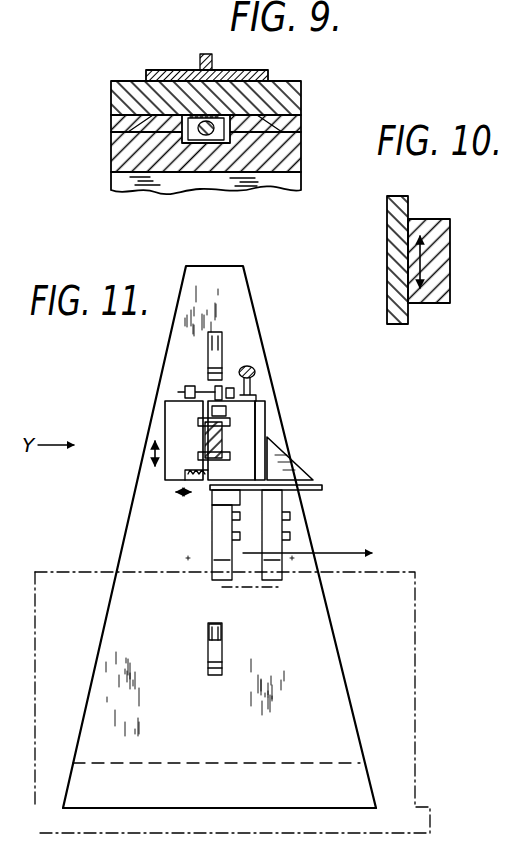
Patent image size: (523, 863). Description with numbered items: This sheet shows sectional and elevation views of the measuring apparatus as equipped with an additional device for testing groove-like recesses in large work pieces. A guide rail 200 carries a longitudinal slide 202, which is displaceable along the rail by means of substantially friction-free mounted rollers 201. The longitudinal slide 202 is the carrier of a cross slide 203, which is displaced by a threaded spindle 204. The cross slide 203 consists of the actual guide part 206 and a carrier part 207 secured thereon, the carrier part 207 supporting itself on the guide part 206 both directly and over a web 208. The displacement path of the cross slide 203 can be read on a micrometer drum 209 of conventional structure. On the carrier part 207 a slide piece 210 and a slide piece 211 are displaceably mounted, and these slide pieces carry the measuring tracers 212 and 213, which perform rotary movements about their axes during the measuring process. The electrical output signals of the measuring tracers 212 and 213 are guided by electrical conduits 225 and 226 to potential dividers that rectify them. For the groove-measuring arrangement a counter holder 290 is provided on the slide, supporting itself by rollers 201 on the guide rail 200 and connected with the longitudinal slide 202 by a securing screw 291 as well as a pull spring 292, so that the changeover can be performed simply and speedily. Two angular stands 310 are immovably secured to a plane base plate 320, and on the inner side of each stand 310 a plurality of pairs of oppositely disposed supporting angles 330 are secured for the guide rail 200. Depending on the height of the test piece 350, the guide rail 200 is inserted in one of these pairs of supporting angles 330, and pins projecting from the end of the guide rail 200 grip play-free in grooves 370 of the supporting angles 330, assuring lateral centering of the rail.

In FIG. 11, the guide rail 200 is at (167, 472).
In FIG. 11, the rollers 201 is at (200, 425).
In FIG. 9, the longitudinal slide 202 is at (303, 142).
In FIG. 11, the longitudinal slide 202 is at (237, 393).
In FIG. 9, the cross slide 203 is at (109, 97).
In FIG. 11, the cross slide 203 is at (268, 421).
In FIG. 9, the threaded spindle 204 is at (206, 143).
In FIG. 9, the guide part 206 is at (130, 84).
In FIG. 10, the carrier part 207 is at (404, 198).
In FIG. 9, the web 208 is at (234, 68).
In FIG. 11, the web 208 is at (298, 467).
In FIG. 11, the micrometer drum 209 is at (258, 370).
In FIG. 11, the slide piece 210 is at (301, 492).
In FIG. 10, the slide piece 211 is at (451, 243).
In FIG. 11, the slide piece 211 is at (211, 500).
In FIG. 11, the measuring tracer 212 is at (278, 582).
In FIG. 11, the measuring tracer 213 is at (217, 583).
In FIG. 11, the electrical conduit 225 is at (356, 573).
In FIG. 11, the electrical conduit 226 is at (366, 551).
In FIG. 11, the counter holder 290 is at (156, 438).
In FIG. 11, the securing screw 291 is at (194, 385).
In FIG. 11, the pull spring 292 is at (190, 490).
In FIG. 11, the angular stand 310 is at (96, 648).
In FIG. 11, the base plate 320 is at (68, 822).
In FIG. 11, the supporting angles 330 is at (225, 340).
In FIG. 11, the test piece 350 is at (417, 745).
In FIG. 11, the grooves 370 is at (209, 628).